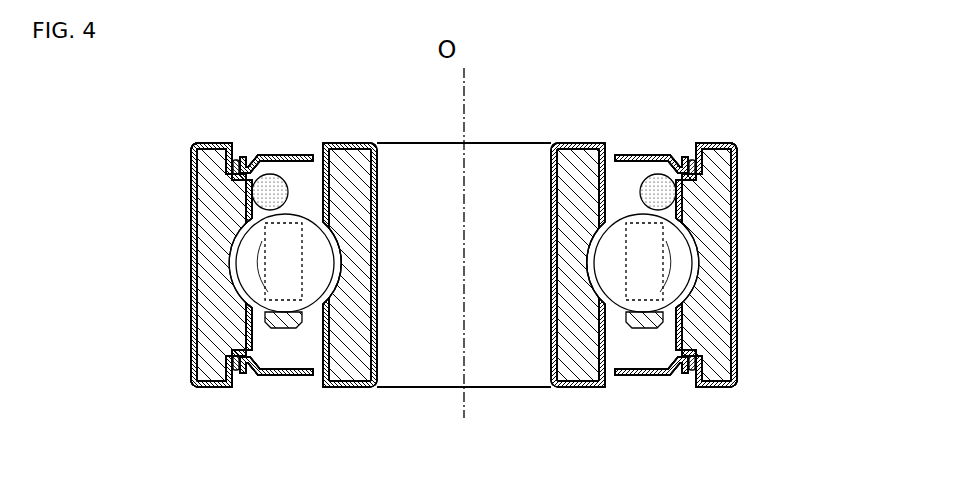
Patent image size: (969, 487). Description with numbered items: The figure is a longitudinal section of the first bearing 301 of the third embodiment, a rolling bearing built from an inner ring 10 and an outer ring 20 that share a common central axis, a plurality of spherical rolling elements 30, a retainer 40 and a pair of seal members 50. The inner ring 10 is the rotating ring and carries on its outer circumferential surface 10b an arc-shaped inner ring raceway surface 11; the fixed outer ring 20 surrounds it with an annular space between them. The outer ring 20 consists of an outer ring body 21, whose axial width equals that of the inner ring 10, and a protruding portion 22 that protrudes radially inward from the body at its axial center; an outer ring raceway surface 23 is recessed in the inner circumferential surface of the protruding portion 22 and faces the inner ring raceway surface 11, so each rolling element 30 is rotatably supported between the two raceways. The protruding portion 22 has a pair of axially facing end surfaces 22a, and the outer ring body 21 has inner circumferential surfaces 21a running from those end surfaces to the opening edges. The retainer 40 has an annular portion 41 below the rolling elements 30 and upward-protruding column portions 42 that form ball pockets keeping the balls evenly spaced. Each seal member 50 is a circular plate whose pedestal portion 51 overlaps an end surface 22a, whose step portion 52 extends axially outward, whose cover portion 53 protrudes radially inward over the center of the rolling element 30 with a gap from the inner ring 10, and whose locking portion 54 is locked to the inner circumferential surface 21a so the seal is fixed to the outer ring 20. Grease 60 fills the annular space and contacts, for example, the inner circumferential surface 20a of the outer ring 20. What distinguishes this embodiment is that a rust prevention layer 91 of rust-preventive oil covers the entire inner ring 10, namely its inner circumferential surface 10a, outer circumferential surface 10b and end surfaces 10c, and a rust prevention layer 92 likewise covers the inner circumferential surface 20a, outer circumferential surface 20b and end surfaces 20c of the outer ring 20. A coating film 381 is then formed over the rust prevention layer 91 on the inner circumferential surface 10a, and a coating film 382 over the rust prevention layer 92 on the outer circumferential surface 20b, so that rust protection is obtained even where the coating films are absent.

The first bearing 301 is at (772, 90).
The inner ring 10 is at (560, 165).
The inner circumferential surface 10a is at (362, 205).
The outer circumferential surface 10b is at (325, 325).
The end surfaces 10c is at (372, 146).
The inner ring raceway surface 11 is at (612, 300).
The outer ring 20 is at (735, 195).
The inner circumferential surface 20a is at (326, 348).
The outer circumferential surface 20b is at (248, 335).
The end surfaces 20c is at (205, 150).
The outer ring body 21 is at (712, 152).
The inner circumferential surfaces 21a is at (700, 155).
The protruding portion 22 is at (672, 368).
The end surfaces 22a is at (690, 165).
The outer ring raceway surface 23 is at (688, 272).
The rolling elements 30 is at (692, 245).
The retainer 40 is at (210, 280).
The annular portion 41 is at (262, 318).
The column portions 42 is at (262, 232).
The seal member 50 is at (280, 153).
The pedestal portion 51 is at (243, 163).
The step portion 52 is at (247, 168).
The cover portion 53 is at (300, 158).
The locking portion 54 is at (233, 165).
The grease 60 is at (262, 190).
The rust prevention layer 91 is at (325, 185).
The rust prevention layer 92 is at (235, 262).
The coating film 381 is at (360, 262).
The coating film 382 is at (208, 305).